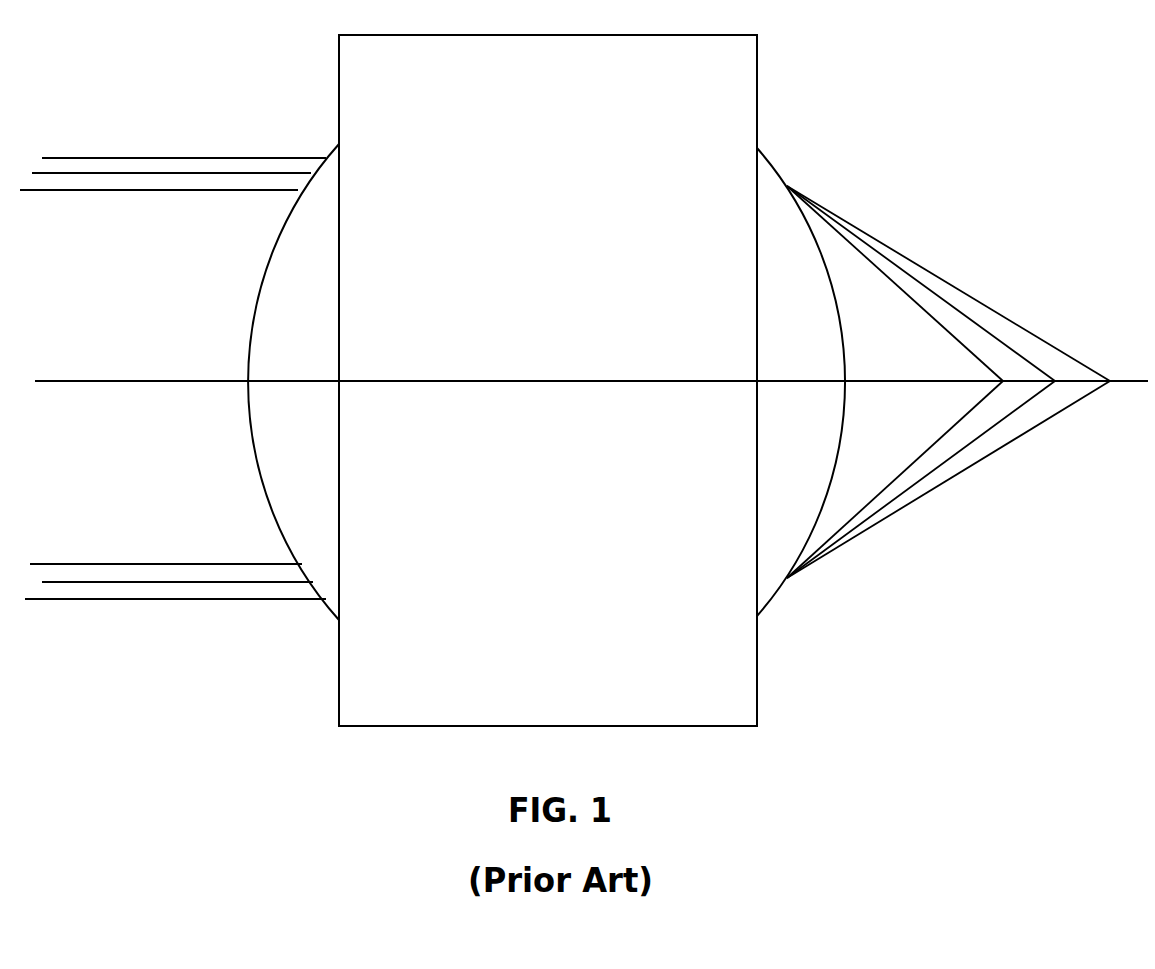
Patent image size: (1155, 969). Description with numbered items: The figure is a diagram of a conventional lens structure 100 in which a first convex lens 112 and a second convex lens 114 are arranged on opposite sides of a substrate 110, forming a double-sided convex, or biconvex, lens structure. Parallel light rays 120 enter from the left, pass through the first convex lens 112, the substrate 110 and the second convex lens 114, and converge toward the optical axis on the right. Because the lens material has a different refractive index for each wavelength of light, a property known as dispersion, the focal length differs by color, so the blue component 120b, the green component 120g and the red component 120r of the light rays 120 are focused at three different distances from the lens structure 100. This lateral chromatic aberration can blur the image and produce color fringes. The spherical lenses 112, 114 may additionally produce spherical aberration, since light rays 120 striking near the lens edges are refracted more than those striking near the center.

The lens structure 100 is at (584, 366).
The substrate 110 is at (562, 292).
The first convex lens 112 is at (327, 314).
The second convex lens 114 is at (822, 316).
The light rays 120 is at (133, 157).
The blue component of the light rays 120b is at (862, 226).
The green component of the light rays 120g is at (910, 272).
The red component of the light rays 120r is at (1003, 313).